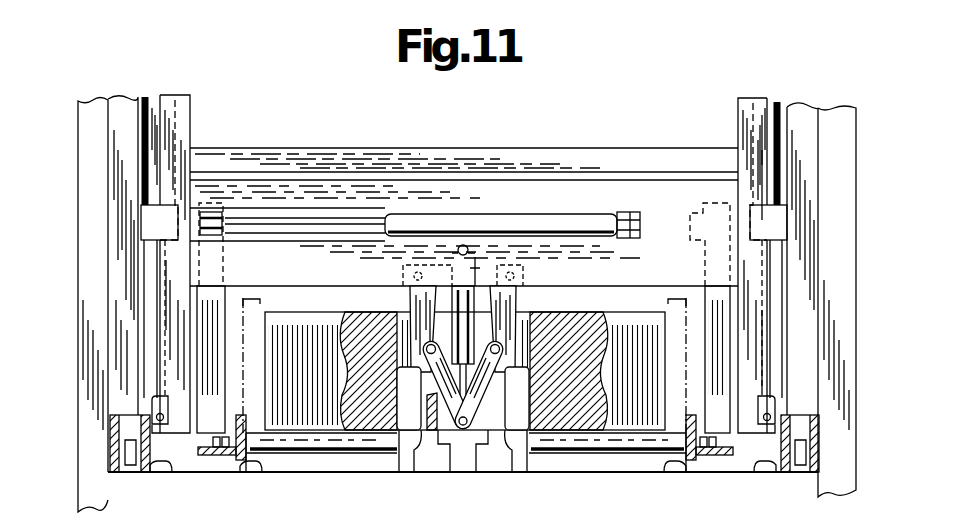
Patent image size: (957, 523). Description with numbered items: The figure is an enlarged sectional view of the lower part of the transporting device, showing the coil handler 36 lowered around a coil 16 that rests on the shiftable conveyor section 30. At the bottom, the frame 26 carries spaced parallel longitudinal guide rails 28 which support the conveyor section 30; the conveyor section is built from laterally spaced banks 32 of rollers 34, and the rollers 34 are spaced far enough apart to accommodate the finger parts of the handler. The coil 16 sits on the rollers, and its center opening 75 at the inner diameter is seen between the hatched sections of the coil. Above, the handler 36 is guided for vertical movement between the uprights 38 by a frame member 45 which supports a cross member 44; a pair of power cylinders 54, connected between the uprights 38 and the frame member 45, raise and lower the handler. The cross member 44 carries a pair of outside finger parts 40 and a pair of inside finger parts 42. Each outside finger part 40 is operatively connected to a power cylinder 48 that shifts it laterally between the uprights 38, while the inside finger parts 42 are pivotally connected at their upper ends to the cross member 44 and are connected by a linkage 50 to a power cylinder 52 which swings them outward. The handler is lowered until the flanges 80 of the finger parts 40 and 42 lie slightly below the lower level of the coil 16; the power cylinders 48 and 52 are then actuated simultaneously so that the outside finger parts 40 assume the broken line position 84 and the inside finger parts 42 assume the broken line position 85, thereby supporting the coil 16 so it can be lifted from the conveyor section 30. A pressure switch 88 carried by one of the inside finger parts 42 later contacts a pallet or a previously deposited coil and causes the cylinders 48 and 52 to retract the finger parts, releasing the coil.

The frame 26 is at (828, 108).
The uprights 38 is at (120, 102).
The power cylinders 54 is at (152, 98).
The frame member 45 is at (184, 118).
The cross member 44 is at (545, 182).
The coil handler 36 is at (661, 190).
The power cylinder 48 is at (571, 222).
The outside finger parts 40 is at (213, 299).
The broken line position 84 is at (259, 300).
The coil 16 is at (303, 313).
The power cylinder 52 is at (462, 298).
The inside finger parts 42 is at (411, 303).
The center opening 75 is at (531, 330).
The linkage 50 is at (468, 434).
The broken line position 85 is at (401, 432).
The pressure switch 88 is at (439, 464).
The flanges 80 is at (212, 457).
The conveyor section 30 is at (246, 467).
The rollers 34 is at (297, 455).
The banks 32 is at (325, 456).
The guide rails 28 is at (121, 475).